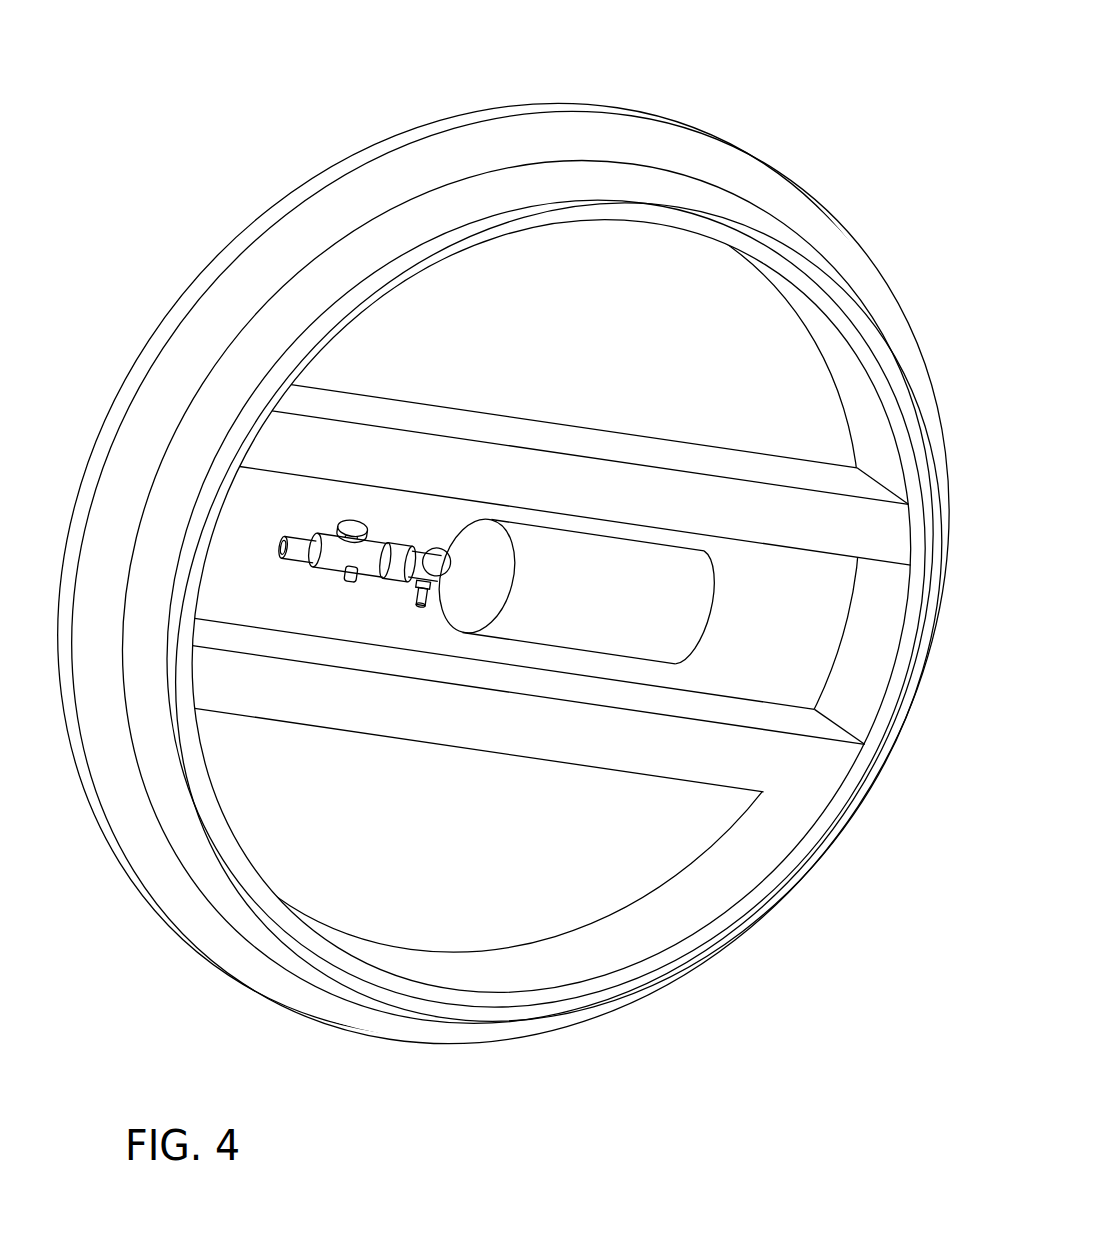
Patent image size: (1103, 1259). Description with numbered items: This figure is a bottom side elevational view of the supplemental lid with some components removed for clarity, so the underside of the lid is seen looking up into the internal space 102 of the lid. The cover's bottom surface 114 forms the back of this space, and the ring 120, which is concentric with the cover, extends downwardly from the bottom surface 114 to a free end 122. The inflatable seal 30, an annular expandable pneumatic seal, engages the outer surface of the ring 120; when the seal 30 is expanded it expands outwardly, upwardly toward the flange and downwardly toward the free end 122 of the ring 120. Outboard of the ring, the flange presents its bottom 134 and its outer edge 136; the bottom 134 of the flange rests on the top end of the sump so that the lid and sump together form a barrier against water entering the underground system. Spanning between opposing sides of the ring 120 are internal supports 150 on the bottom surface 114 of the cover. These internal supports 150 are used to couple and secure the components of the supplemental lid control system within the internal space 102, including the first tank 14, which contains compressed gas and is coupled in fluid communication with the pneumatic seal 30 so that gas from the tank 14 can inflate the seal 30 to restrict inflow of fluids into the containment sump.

The internal space 102 is at (730, 291).
The first tank 14 is at (598, 604).
The inflatable seal 30 is at (450, 200).
The bottom surface 114 is at (627, 293).
The ring 120 is at (713, 897).
The free end 122 is at (595, 983).
The bottom 134 is at (320, 215).
The outer edge 136 is at (195, 285).
The internal supports 150 is at (778, 778).